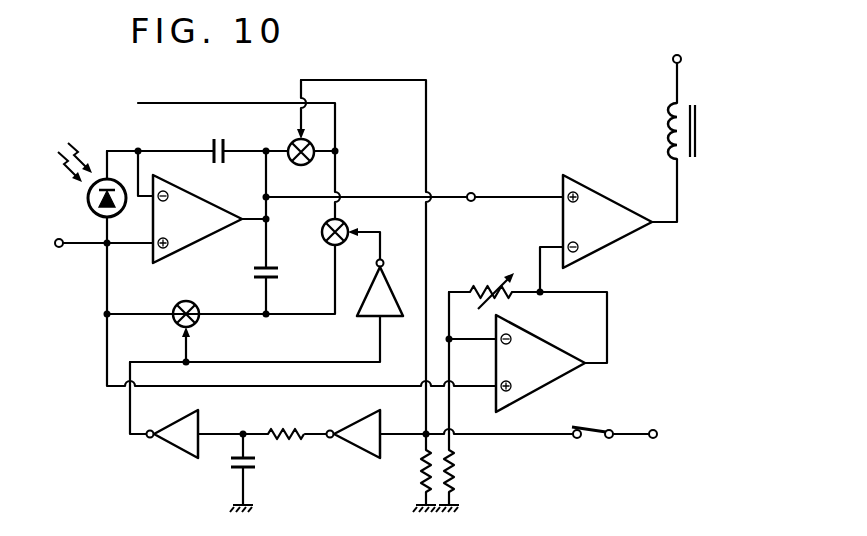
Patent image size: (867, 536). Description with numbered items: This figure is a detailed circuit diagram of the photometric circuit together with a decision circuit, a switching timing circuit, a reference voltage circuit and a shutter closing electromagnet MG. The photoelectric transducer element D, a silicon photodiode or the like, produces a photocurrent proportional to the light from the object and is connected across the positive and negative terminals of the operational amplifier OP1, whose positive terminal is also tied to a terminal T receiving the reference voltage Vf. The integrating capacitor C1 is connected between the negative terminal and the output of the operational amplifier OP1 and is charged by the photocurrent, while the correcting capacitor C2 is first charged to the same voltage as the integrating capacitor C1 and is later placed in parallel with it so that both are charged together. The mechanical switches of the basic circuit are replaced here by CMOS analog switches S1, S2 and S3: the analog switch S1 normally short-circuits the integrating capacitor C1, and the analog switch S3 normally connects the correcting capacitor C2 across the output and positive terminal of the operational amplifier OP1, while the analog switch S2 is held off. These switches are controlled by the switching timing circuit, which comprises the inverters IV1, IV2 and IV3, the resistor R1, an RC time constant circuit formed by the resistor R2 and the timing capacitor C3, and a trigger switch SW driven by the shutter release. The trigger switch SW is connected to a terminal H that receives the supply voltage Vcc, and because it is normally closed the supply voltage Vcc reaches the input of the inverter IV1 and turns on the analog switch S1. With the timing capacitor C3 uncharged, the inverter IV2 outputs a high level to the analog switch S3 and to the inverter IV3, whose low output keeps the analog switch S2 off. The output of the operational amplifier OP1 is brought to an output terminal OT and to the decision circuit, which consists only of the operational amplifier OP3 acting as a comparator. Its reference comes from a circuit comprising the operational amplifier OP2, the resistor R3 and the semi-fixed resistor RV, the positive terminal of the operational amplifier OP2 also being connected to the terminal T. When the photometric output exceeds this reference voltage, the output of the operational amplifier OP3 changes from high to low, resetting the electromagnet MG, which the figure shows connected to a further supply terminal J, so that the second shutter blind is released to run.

The photoelectric transducer element D is at (88, 200).
The reference voltage Vf is at (38, 242).
The terminal T is at (59, 247).
The operational amplifier OP1 is at (197, 219).
The integrating capacitor C1 is at (214, 139).
The analog switch S1 is at (293, 142).
The analog switch S2 is at (346, 227).
The analog switch S3 is at (196, 325).
The correcting capacitor C2 is at (279, 272).
The inverter IV3 is at (372, 317).
The inverter IV2 is at (180, 453).
The inverter IV1 is at (363, 455).
The resistor R2 is at (284, 432).
The timing capacitor C3 is at (255, 464).
The resistor R1 is at (420, 474).
The resistor R3 is at (456, 471).
The trigger switch SW is at (600, 441).
The terminal H is at (653, 441).
The supply voltage Vcc is at (681, 238).
The power supply terminal J is at (681, 60).
The electromagnet MG is at (670, 131).
The operational amplifier OP3 is at (607, 221).
The output terminal OT is at (474, 194).
The semi-fixed resistor RV is at (484, 290).
The operational amplifier OP2 is at (540, 363).